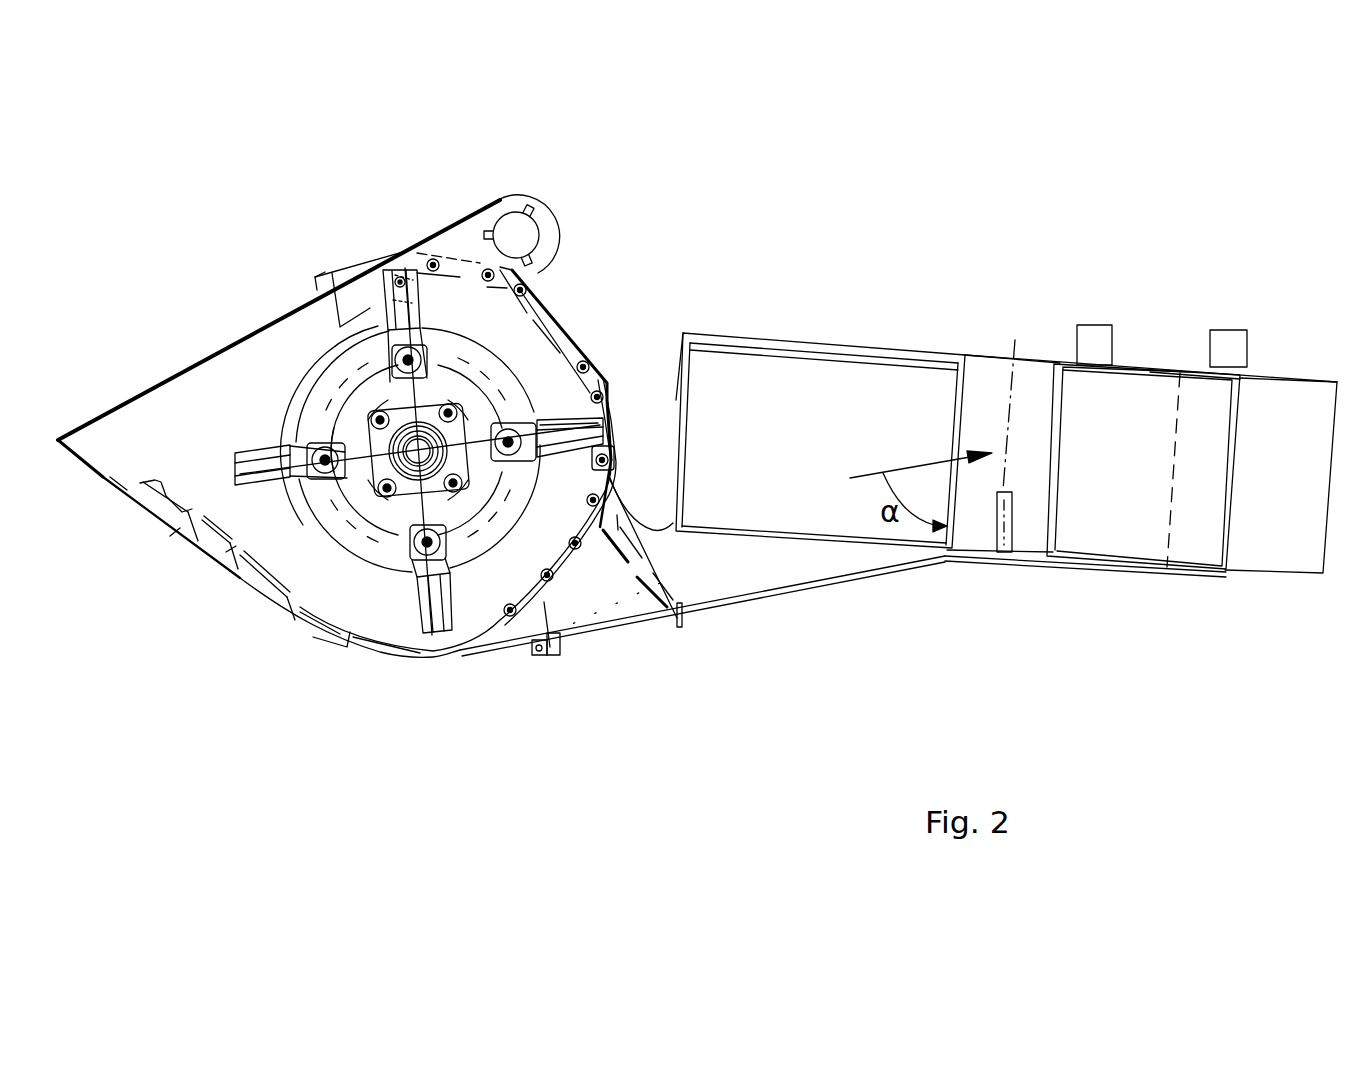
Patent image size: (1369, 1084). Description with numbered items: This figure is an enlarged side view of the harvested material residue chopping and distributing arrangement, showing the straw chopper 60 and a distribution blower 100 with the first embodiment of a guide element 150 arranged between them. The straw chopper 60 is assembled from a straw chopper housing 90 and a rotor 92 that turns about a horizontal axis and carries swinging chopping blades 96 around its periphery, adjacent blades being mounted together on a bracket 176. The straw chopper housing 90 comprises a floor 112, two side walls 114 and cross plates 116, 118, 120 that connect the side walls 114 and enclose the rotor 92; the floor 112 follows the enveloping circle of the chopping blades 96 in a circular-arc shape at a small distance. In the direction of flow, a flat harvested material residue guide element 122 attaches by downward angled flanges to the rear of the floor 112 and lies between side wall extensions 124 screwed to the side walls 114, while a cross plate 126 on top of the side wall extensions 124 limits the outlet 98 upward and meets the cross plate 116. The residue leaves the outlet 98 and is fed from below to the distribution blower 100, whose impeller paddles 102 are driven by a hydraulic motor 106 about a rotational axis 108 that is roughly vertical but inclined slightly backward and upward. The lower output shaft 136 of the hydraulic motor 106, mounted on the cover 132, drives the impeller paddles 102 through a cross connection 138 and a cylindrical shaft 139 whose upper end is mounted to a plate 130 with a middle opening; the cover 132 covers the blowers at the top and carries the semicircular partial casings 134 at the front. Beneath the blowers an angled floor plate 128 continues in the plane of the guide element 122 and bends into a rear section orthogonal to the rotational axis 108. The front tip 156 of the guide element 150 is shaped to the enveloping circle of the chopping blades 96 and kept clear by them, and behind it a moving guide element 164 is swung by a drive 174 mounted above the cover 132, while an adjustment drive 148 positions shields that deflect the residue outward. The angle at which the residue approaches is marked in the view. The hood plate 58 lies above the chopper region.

The hood plate 58 is at (212, 400).
The straw chopper 60 is at (431, 712).
The straw chopper housing 90 is at (588, 355).
The rotor 92 is at (450, 372).
The chopping blades 96 is at (550, 402).
The outlet 98 is at (548, 655).
The distribution blower 100 is at (1096, 612).
The impeller paddles 102 is at (1132, 487).
The hydraulic motor 106 is at (1032, 473).
The rotational axis 108 is at (1007, 457).
The floor 112 is at (453, 653).
The side walls 114 is at (286, 394).
The cross plate 116 is at (610, 392).
The cross plate 118 is at (540, 345).
The cross plate 120 is at (187, 543).
The harvested material residue guide element 122 is at (612, 622).
The side wall extensions 124 is at (612, 606).
The cross plate 126 is at (613, 505).
The floor plate 128 is at (870, 573).
The plate 130 is at (1153, 372).
The cover 132 is at (778, 340).
The partial casings 134 is at (675, 372).
The lower output shaft 136 is at (1007, 535).
The cross connection 138 is at (972, 556).
The cylindrical shaft 139 is at (955, 422).
The adjustment drive 148 is at (1093, 338).
The guide element 150 is at (662, 632).
The front tip 156 is at (560, 570).
The moving guide element 164 is at (1293, 393).
The drive 174 is at (1230, 343).
The bracket 176 is at (385, 392).